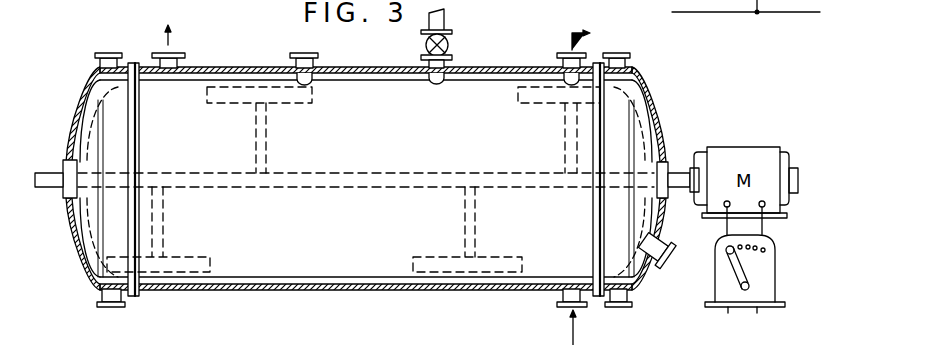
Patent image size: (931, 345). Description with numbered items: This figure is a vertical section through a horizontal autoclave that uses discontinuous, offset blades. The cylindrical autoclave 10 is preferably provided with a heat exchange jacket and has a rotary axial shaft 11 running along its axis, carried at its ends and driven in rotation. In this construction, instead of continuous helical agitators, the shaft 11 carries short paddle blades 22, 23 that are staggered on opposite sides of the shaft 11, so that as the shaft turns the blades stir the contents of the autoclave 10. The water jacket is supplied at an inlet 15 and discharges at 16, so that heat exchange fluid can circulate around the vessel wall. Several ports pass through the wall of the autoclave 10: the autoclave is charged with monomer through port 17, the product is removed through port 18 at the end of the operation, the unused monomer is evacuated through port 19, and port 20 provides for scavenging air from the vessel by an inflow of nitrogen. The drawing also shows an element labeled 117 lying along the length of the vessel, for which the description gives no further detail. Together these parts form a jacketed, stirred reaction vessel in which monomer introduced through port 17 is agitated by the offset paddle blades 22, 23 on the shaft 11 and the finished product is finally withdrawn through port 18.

The cylindrical autoclave 10 is at (393, 275).
The rotary axial shaft 11 is at (678, 172).
The inlet 15 is at (563, 293).
The discharge 16 is at (157, 55).
The port 17 is at (452, 57).
The port 18 is at (652, 270).
The port 19 is at (293, 63).
The port 20 is at (557, 65).
The paddle blade 22 is at (230, 105).
The paddle blade 23 is at (443, 237).
The conveyor screen 117 is at (401, 172).